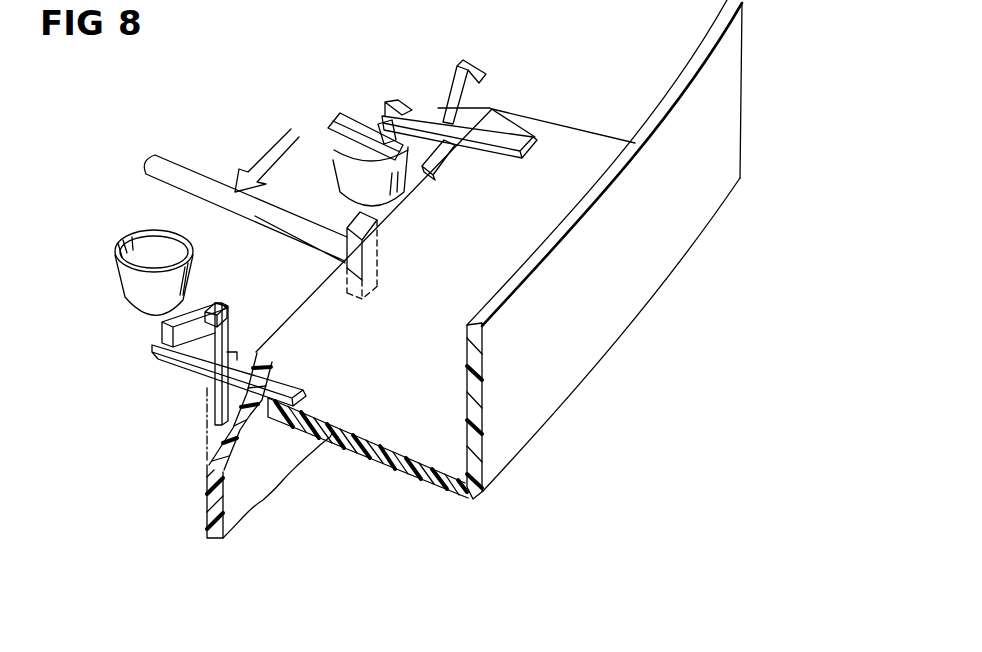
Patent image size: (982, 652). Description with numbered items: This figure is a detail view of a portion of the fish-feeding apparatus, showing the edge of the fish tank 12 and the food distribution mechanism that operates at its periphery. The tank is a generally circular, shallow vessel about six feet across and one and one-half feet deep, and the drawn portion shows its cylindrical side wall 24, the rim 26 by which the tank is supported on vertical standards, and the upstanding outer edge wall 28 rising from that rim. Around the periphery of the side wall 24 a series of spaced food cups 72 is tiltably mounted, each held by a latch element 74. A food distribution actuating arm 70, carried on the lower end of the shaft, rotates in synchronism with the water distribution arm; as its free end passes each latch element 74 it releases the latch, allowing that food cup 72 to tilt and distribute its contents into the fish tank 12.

The fish tank 12 is at (160, 470).
The cylindrical side wall 24 is at (238, 507).
The rim 26 is at (390, 466).
The upstanding outer edge wall 28 is at (618, 272).
The food distribution actuating arm 70 is at (207, 158).
The food cup 72 is at (370, 127).
The latch element 74 is at (463, 75).